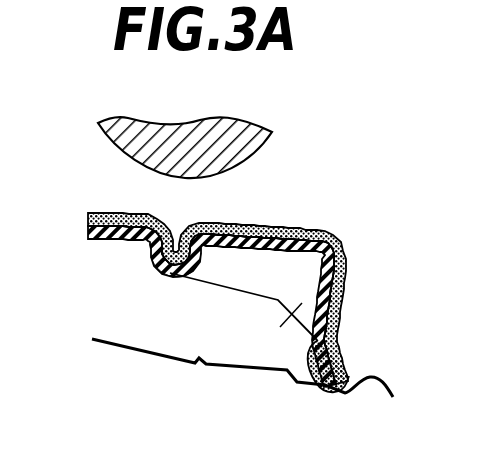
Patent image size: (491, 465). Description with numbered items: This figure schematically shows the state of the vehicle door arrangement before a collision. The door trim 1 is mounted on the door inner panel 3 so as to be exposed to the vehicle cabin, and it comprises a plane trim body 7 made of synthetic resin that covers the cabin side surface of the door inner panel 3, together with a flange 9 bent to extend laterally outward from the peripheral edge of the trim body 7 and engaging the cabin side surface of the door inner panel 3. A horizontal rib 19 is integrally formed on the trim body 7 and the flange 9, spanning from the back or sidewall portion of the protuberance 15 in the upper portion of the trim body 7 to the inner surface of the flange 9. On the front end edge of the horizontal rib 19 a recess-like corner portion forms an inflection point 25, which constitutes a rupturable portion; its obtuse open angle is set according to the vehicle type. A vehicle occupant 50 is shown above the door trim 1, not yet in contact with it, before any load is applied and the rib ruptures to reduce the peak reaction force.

The door trim 1 is at (235, 273).
The door inner panel 3 is at (260, 372).
The plane trim body 7 is at (284, 223).
The flange 9 is at (340, 323).
The protuberance 15 is at (156, 271).
The horizontal rib 19 is at (280, 327).
The inflection point 25 is at (272, 301).
The vehicle occupant 50 is at (273, 140).